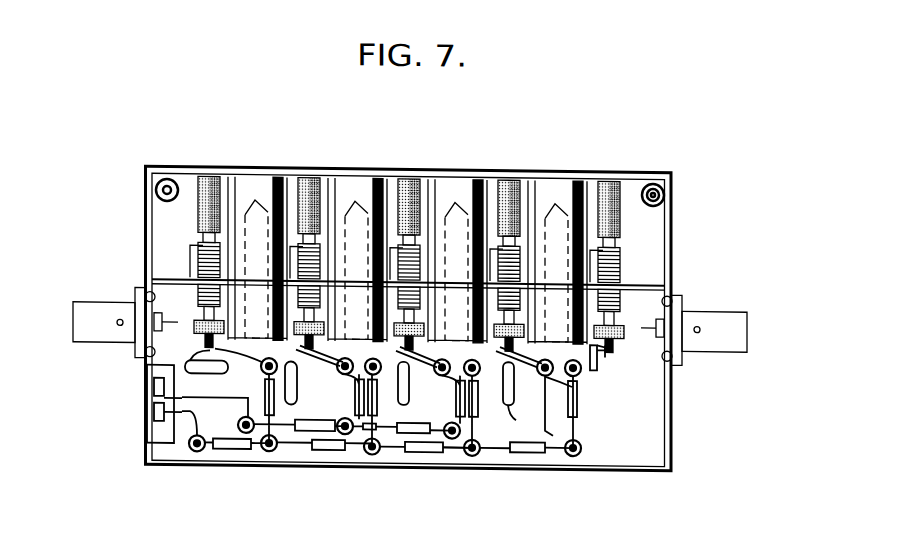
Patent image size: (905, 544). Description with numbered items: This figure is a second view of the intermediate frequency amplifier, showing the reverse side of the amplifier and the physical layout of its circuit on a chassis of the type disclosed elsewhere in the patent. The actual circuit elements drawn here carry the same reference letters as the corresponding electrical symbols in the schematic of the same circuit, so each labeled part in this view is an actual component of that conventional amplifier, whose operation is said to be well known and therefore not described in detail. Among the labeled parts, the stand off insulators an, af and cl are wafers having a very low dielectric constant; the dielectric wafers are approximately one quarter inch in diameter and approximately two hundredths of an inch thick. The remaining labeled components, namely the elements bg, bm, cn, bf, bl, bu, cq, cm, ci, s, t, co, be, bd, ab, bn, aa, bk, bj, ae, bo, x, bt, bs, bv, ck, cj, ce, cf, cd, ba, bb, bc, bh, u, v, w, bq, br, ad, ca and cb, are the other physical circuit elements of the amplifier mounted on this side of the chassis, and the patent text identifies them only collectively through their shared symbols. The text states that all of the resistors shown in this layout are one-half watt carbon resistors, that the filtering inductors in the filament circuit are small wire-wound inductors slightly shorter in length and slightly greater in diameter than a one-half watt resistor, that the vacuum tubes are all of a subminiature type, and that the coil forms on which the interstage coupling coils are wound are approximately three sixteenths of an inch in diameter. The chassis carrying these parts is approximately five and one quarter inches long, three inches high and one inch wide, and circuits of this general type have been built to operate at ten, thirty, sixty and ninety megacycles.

The tube bg is at (270, 180).
The tube bm is at (372, 180).
The coil assembly cn is at (178, 289).
The coil assembly bf is at (320, 272).
The coil assembly bl is at (420, 271).
The coil assembly bu is at (520, 272).
The coil assembly cq is at (621, 267).
The left connector block cm is at (95, 348).
The right connector block ci is at (744, 349).
The socket s is at (147, 399).
The terminal t is at (239, 426).
The contact co is at (214, 376).
The terminal be is at (261, 368).
The resistor bd is at (264, 394).
The stand off insulator an is at (337, 367).
The terminal ab is at (366, 373).
The capacitor bn is at (291, 398).
The terminal aa is at (356, 390).
The capacitor bk is at (398, 372).
The resistor bj is at (377, 396).
The stand off insulator af is at (436, 371).
The resistor ae is at (366, 392).
The resistor bo is at (412, 423).
The terminal x is at (450, 422).
The terminal bt is at (478, 370).
The stand off insulator cl is at (510, 383).
The resistor bs is at (477, 416).
The lead bv is at (516, 419).
The terminal ck is at (546, 375).
The lead cj is at (545, 419).
The terminal ce is at (576, 374).
The contact cf is at (598, 366).
The resistor cd is at (578, 414).
The terminal ba is at (192, 461).
The resistor bb is at (232, 456).
The terminal bc is at (269, 458).
The resistor bh is at (320, 456).
The resistor u is at (311, 453).
The fuse v is at (353, 456).
The resistor w is at (401, 455).
The resistor bq is at (415, 455).
The terminal br is at (467, 457).
The lead ad is at (470, 455).
The resistor ca is at (516, 454).
The terminal cb is at (569, 456).